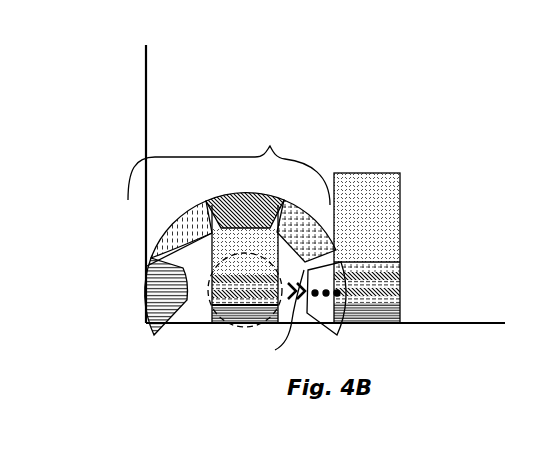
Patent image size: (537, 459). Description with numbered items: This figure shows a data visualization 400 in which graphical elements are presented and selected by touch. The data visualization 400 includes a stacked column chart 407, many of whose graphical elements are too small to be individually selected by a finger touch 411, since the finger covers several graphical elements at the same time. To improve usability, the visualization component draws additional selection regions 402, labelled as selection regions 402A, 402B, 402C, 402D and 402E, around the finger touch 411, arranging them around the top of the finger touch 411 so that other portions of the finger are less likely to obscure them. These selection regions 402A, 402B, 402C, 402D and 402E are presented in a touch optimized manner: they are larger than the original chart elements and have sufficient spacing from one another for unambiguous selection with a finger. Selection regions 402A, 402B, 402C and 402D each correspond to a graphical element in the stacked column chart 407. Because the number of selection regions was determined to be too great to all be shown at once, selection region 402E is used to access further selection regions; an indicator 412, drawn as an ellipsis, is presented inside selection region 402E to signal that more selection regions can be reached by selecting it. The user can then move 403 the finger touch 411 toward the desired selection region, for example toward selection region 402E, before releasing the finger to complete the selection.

The data visualization 400 is at (213, 93).
The selection regions 402 is at (270, 146).
The selection region 402A is at (148, 303).
The selection region 402B is at (167, 238).
The selection region 402C is at (248, 196).
The selection region 402D is at (308, 210).
The selection region 402E is at (343, 333).
The move 403 is at (242, 325).
The stacked column chart 407 is at (147, 266).
The finger touch 411 is at (207, 300).
The indicator 412 is at (346, 272).